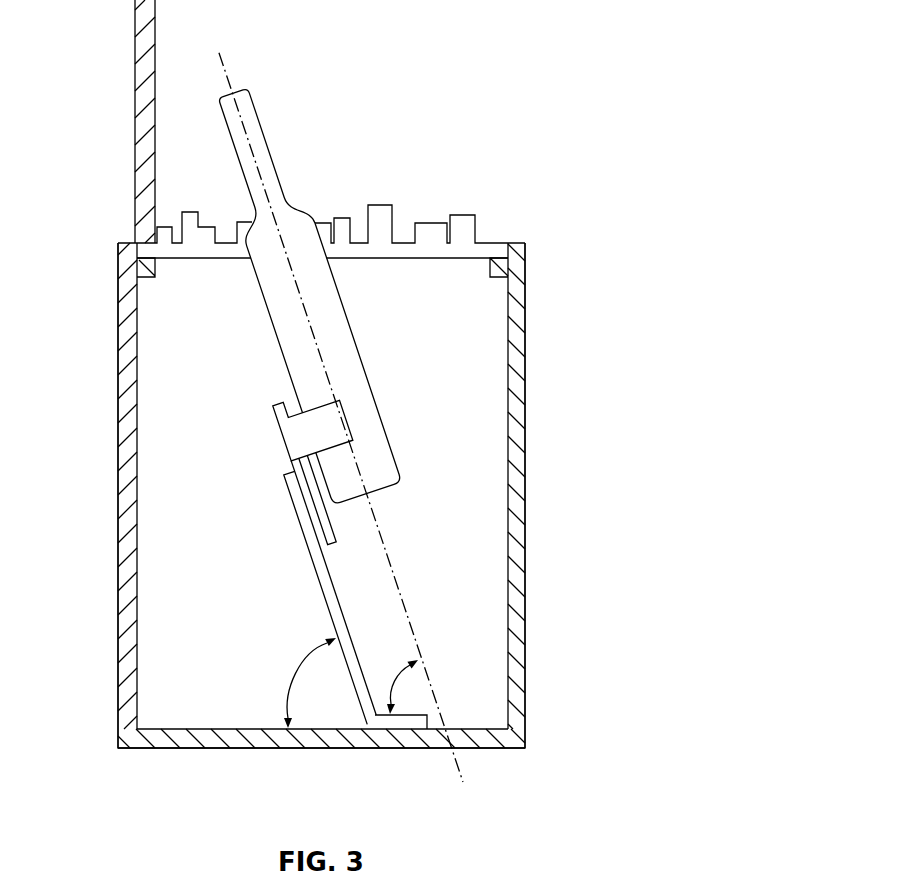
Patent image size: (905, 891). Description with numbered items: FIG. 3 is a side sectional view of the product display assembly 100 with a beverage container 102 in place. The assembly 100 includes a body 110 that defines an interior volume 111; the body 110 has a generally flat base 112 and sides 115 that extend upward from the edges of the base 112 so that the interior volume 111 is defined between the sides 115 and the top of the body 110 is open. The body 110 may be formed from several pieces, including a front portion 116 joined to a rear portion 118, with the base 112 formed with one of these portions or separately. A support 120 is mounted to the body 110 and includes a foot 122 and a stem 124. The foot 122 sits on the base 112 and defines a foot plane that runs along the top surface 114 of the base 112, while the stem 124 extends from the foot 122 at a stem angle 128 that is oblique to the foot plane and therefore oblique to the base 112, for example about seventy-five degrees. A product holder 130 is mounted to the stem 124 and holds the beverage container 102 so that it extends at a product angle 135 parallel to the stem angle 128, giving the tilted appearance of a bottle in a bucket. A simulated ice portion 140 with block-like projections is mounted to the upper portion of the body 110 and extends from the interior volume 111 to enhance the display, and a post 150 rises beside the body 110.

The product display assembly 100 is at (540, 32).
The beverage container 102 is at (274, 159).
The body 110 is at (538, 478).
The interior volume 111 is at (440, 292).
The base 112 is at (317, 750).
The top surface of the base 114 is at (163, 728).
The sides 115 is at (517, 386).
The front portion 116 is at (525, 558).
The rear portion 118 is at (117, 581).
The support 120 is at (305, 592).
The foot 122 is at (425, 728).
The stem 124 is at (361, 581).
The stem angle 128 is at (300, 672).
The product holder 130 is at (283, 439).
The product angle 135 is at (400, 690).
The simulated ice portion 140 is at (190, 212).
The post 150 is at (157, 35).